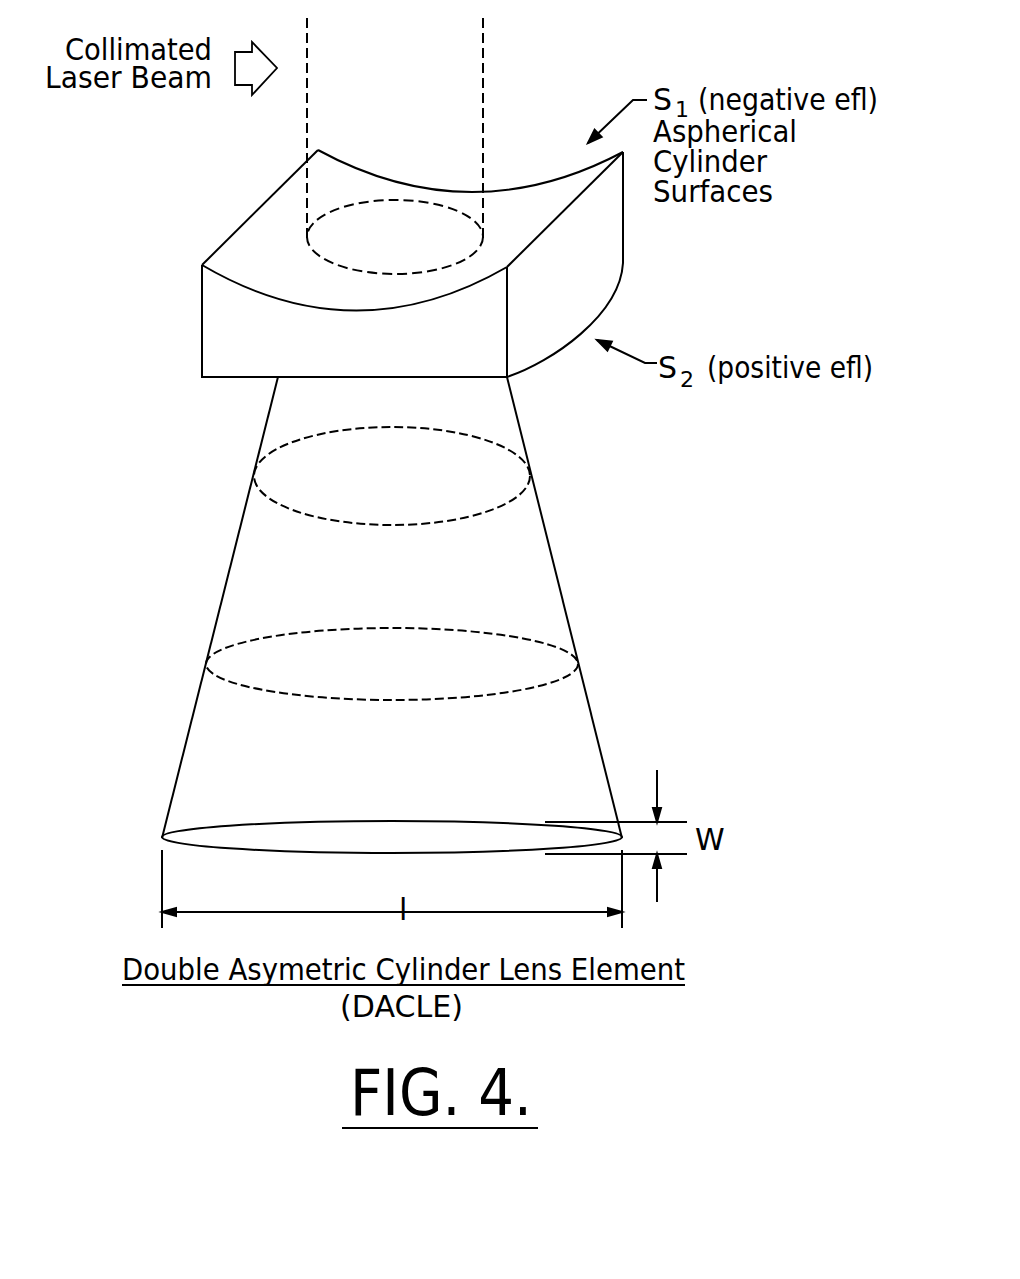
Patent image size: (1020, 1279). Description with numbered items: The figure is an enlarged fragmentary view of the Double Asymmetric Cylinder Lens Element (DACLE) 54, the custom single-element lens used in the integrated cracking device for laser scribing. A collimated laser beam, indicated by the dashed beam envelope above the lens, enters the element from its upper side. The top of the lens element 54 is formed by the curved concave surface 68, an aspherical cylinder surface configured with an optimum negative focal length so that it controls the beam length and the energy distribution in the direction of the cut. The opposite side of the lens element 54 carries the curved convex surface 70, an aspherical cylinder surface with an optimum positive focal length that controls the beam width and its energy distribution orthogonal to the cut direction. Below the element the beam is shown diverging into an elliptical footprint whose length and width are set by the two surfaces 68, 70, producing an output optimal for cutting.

The Double Asymmetric Cylinder Lens Element (DACLE) 54 is at (200, 285).
The concave surface (S1) 68 is at (523, 187).
The convex surface (S2) 70 is at (535, 367).